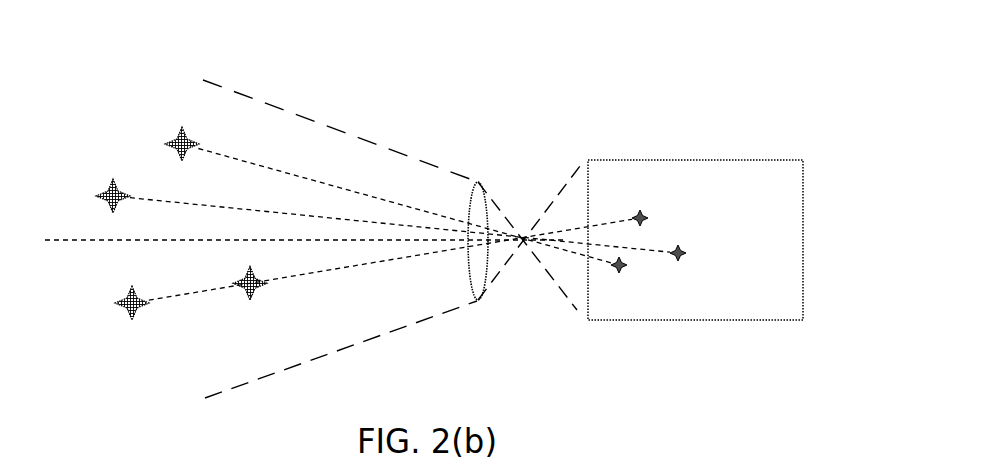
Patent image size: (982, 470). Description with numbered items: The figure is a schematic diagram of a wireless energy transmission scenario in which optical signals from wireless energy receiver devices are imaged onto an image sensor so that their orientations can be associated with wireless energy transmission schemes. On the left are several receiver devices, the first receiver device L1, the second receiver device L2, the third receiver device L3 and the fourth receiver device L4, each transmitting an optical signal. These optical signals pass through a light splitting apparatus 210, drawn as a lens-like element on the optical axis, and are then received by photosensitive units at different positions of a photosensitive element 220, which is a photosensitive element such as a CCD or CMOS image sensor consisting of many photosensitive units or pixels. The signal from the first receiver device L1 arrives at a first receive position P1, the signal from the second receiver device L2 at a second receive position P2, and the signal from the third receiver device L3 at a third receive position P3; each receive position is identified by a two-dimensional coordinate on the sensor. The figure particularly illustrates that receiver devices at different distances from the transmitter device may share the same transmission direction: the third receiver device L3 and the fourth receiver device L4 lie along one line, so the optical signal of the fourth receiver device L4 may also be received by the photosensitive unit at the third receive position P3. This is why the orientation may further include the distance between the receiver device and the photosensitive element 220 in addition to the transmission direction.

The light splitting apparatus 210 is at (495, 234).
The photosensitive element 220 is at (695, 240).
The first receiver device L1 is at (163, 144).
The second receiver device L2 is at (96, 196).
The third receiver device L3 is at (253, 302).
The fourth receiver device L4 is at (122, 320).
The first receive position P1 is at (664, 281).
The second receive position P2 is at (732, 253).
The third receive position P3 is at (693, 218).